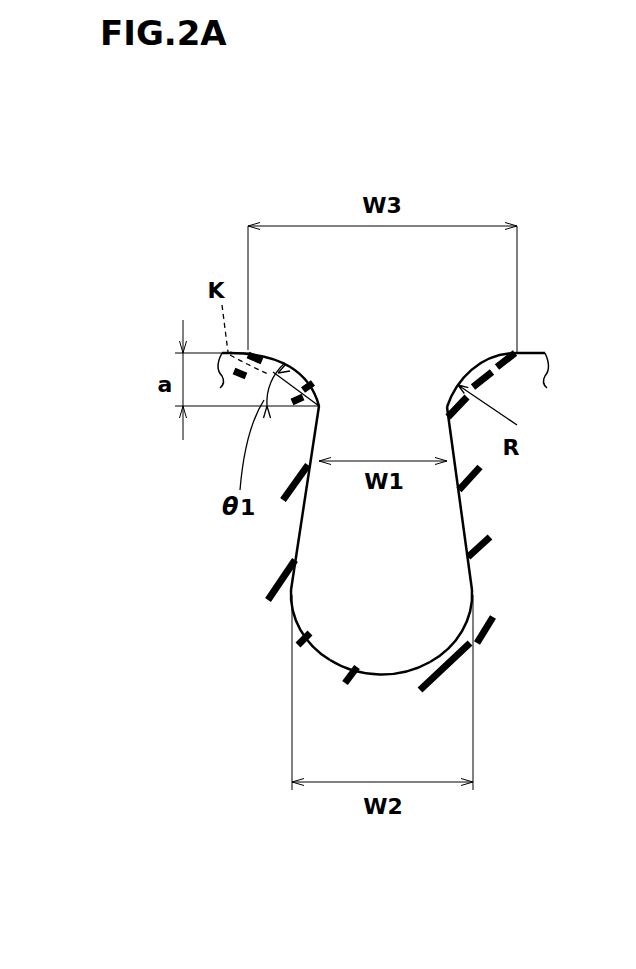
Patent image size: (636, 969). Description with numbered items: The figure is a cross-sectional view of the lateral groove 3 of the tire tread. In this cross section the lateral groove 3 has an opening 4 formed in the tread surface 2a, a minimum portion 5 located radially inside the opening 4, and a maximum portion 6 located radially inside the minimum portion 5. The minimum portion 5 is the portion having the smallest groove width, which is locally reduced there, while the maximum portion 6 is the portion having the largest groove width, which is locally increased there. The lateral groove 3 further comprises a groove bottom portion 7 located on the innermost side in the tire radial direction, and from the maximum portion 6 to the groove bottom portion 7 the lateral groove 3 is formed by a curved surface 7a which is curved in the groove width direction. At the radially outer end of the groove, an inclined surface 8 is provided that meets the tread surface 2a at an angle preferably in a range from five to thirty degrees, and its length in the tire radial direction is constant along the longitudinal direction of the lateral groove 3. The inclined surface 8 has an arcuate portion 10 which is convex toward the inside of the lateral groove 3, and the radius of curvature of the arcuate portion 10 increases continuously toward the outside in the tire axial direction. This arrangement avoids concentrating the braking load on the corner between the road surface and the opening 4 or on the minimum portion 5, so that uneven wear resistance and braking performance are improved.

The tread surface 2a is at (541, 352).
The lateral groove 3 is at (375, 548).
The opening 4 is at (315, 368).
The minimum portion 5 is at (325, 394).
The maximum portion 6 is at (308, 606).
The groove bottom portion 7 is at (386, 668).
The curved surface 7a is at (430, 650).
The inclined surface 8 is at (458, 384).
The arcuate portion 10 is at (498, 377).